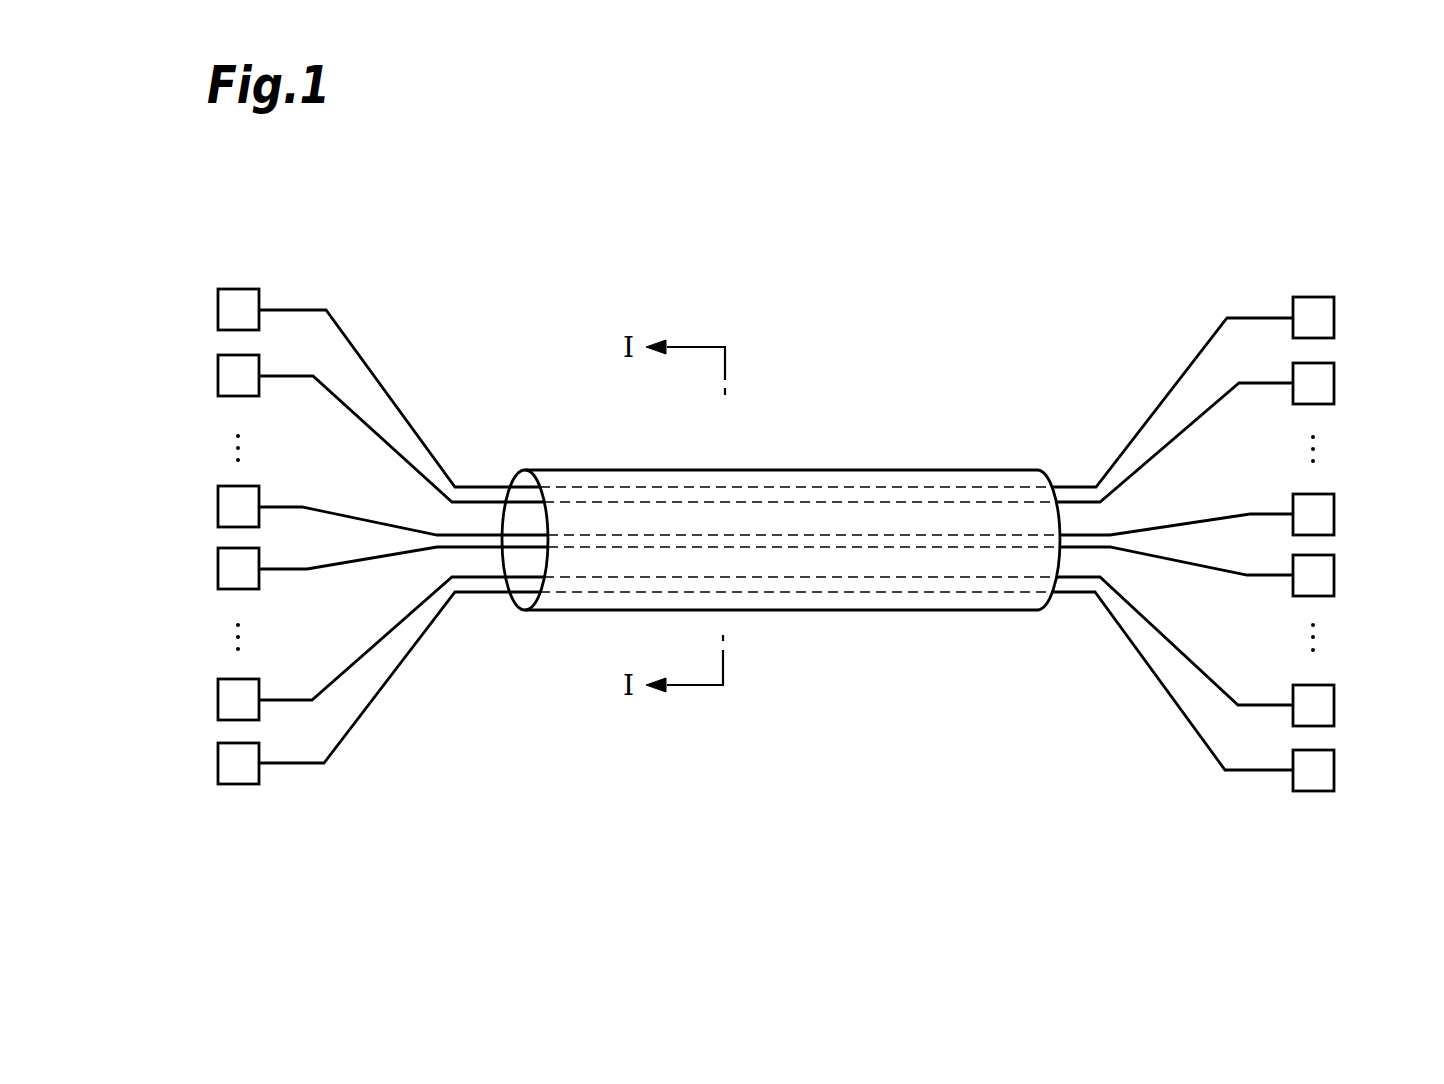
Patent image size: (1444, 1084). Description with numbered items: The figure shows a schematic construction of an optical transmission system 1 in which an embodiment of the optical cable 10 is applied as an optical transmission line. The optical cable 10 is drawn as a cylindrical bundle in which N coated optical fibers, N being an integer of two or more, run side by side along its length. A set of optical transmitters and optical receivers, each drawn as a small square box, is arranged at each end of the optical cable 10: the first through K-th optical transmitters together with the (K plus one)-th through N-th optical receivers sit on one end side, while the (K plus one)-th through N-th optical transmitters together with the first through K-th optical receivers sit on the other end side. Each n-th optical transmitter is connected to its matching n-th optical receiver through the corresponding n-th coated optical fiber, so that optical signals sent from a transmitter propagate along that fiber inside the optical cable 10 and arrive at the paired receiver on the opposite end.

The optical transmission system 1 is at (885, 296).
The optical cable 10 is at (815, 470).